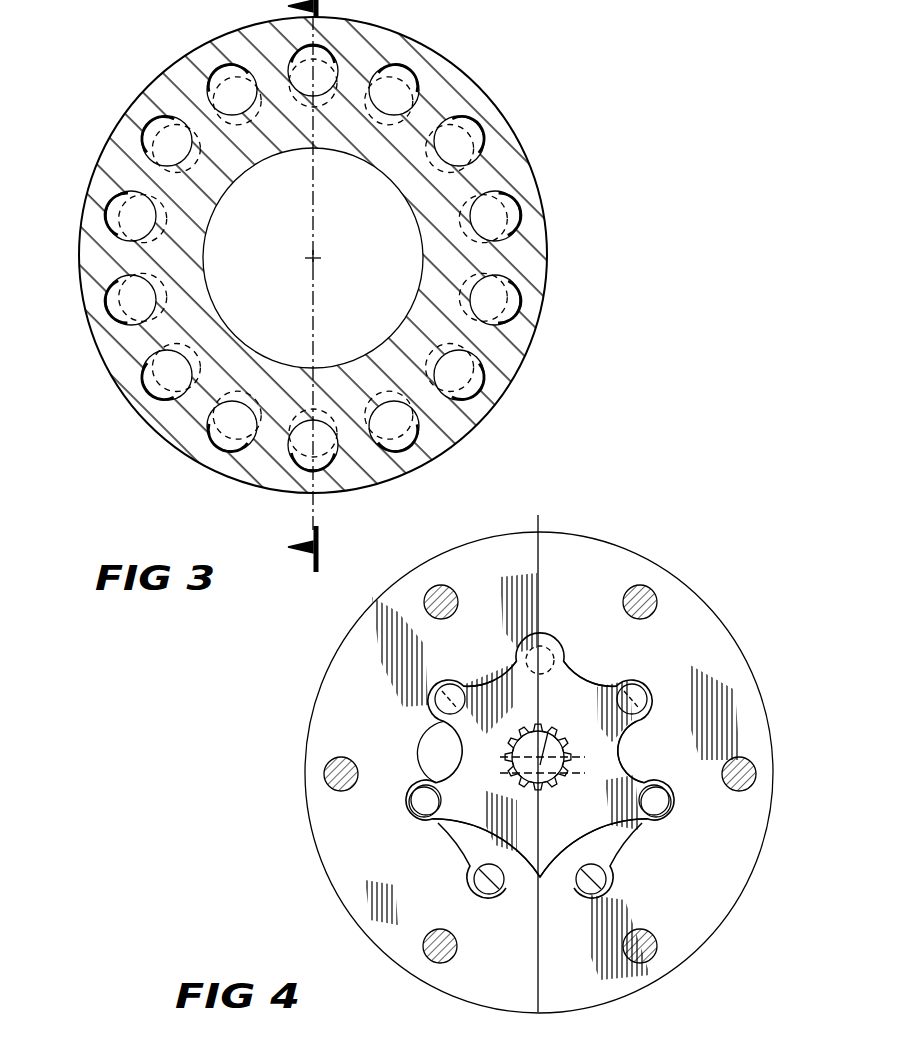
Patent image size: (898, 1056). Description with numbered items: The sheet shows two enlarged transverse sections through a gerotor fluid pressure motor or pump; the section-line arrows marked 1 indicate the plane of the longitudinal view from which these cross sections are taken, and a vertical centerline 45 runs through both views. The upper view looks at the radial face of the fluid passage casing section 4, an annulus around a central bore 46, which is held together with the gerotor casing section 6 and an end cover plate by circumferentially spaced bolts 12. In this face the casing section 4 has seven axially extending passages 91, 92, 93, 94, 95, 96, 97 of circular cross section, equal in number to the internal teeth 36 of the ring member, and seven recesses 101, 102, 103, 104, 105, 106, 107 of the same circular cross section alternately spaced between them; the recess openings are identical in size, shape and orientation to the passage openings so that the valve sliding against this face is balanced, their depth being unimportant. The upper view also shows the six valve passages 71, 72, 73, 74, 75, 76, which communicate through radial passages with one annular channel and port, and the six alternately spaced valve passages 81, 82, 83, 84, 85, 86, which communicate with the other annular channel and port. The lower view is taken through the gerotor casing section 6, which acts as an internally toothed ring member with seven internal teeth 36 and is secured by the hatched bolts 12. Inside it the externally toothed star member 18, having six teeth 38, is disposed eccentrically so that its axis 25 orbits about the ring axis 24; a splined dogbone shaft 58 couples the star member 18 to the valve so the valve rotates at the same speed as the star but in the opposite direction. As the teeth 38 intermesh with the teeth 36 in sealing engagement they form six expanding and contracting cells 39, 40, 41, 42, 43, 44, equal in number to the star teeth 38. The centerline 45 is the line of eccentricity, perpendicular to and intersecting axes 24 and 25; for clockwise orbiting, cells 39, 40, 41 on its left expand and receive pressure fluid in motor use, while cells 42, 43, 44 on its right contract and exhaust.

In FIG. 3, the section line 1- 1 is at (321, 286).
In FIG. 3, the fluid passage casing section 4 is at (527, 147).
In FIG. 4, the gerotor casing section 6 is at (770, 712).
In FIG. 4, the bolts 12 is at (325, 774).
In FIG. 4, the star member 18 is at (476, 862).
In FIG. 4, the axis of ring member 24 is at (560, 780).
In FIG. 4, the axis of star member 25 is at (551, 742).
In FIG. 4, the internal teeth 36 is at (447, 735).
In FIG. 4, the star teeth 38 is at (657, 809).
In FIG. 4, the cell 39 is at (470, 850).
In FIG. 4, the cell 40 is at (446, 757).
In FIG. 4, the cell 41 is at (490, 683).
In FIG. 4, the cell 42 is at (582, 685).
In FIG. 4, the cell 43 is at (646, 778).
In FIG. 4, the cell 44 is at (601, 862).
In FIG. 3, the vertical centerline 45 is at (316, 500).
In FIG. 4, the vertical centerline 45 is at (541, 526).
In FIG. 3, the bore 46 is at (269, 158).
In FIG. 4, the dogbone shaft 58 is at (512, 773).
In FIG. 3, the valve passage 71 is at (145, 405).
In FIG. 3, the valve passage 72 is at (106, 214).
In FIG. 3, the valve passage 73 is at (200, 65).
In FIG. 3, the valve passage 74 is at (486, 116).
In FIG. 3, the valve passage 75 is at (522, 298).
In FIG. 3, the valve passage 76 is at (382, 417).
In FIG. 3, the valve passage 81 is at (254, 418).
In FIG. 3, the valve passage 82 is at (114, 314).
In FIG. 3, the valve passage 83 is at (157, 125).
In FIG. 3, the valve passage 84 is at (378, 90).
In FIG. 3, the valve passage 85 is at (531, 203).
In FIG. 3, the valve passage 86 is at (502, 393).
In FIG. 3, the casing passage 91 is at (242, 445).
In FIG. 4, the casing passage 91 is at (497, 888).
In FIG. 3, the casing passage 92 is at (110, 328).
In FIG. 4, the casing passage 92 is at (436, 795).
In FIG. 3, the casing passage 93 is at (138, 128).
In FIG. 4, the casing passage 93 is at (456, 690).
In FIG. 3, the casing passage 94 is at (332, 45).
In FIG. 4, the casing passage 94 is at (550, 664).
In FIG. 3, the casing passage 95 is at (484, 134).
In FIG. 4, the casing passage 95 is at (634, 694).
In FIG. 3, the casing passage 96 is at (521, 283).
In FIG. 4, the casing passage 96 is at (660, 811).
In FIG. 3, the casing passage 97 is at (401, 439).
In FIG. 4, the casing passage 97 is at (597, 884).
In FIG. 3, the recess 101 is at (152, 398).
In FIG. 3, the recess 102 is at (106, 231).
In FIG. 3, the recess 103 is at (236, 28).
In FIG. 3, the recess 104 is at (399, 67).
In FIG. 3, the recess 105 is at (516, 226).
In FIG. 3, the recess 106 is at (488, 378).
In FIG. 3, the recess 107 is at (292, 480).